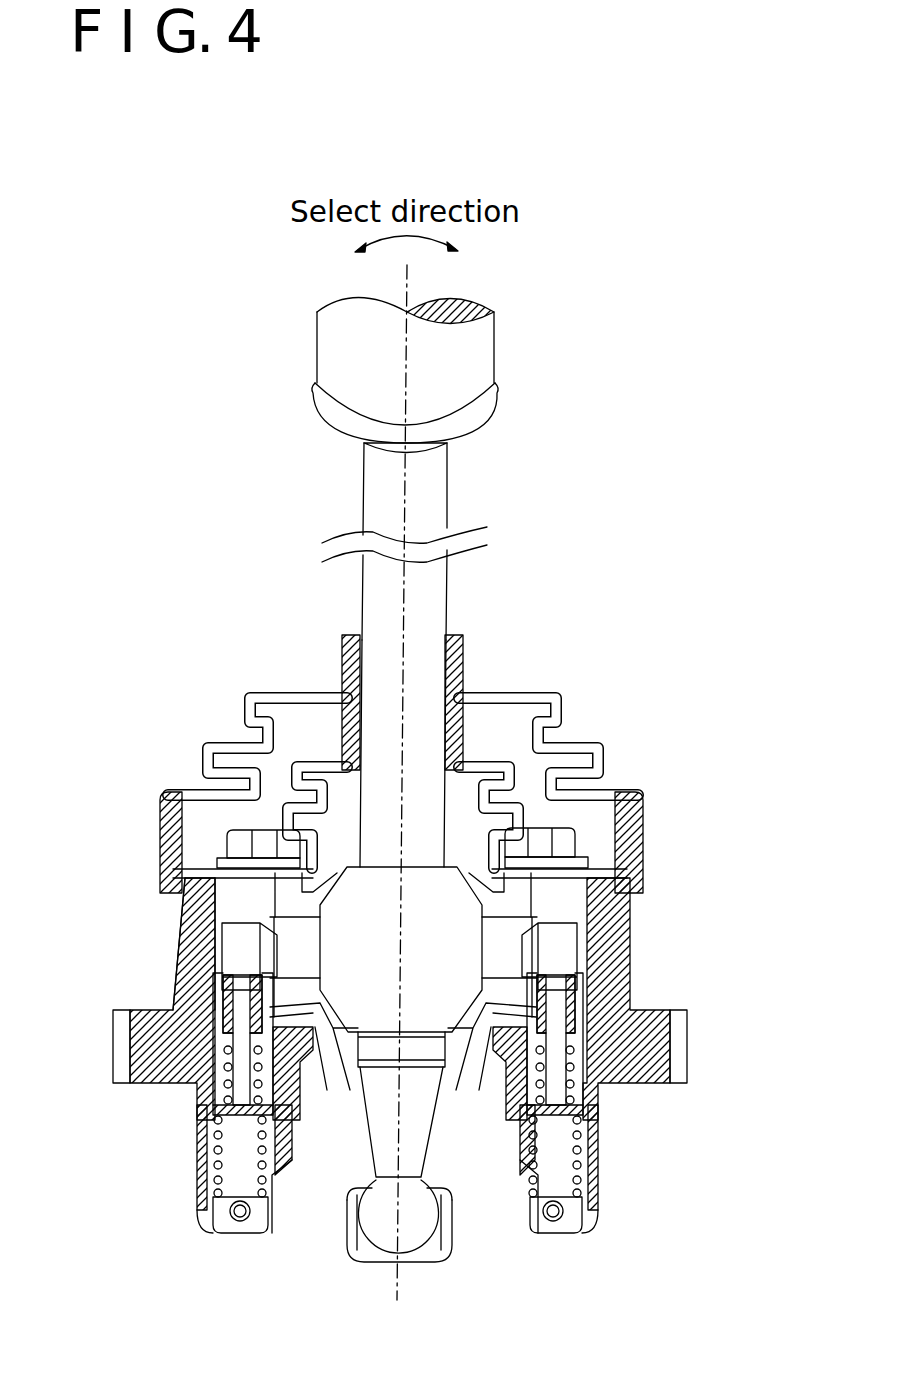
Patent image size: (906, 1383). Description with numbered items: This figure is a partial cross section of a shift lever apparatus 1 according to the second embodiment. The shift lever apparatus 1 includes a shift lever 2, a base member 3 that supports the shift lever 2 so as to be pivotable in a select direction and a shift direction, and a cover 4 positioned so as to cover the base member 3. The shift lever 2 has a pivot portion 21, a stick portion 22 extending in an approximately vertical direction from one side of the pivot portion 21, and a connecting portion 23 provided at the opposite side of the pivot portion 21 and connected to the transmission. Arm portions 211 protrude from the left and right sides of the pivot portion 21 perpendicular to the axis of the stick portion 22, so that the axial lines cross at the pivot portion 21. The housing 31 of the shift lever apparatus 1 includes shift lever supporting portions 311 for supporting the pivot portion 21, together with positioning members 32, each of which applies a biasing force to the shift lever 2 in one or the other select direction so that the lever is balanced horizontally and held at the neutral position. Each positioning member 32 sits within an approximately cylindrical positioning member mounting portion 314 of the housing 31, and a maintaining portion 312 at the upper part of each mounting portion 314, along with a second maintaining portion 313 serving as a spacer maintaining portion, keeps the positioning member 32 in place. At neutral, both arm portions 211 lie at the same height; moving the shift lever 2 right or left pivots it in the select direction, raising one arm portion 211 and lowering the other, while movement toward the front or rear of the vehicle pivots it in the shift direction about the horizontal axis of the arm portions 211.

The shift lever apparatus 1 is at (236, 224).
The shift lever 2 is at (450, 487).
The stick portion 22 is at (452, 598).
The pivot portion 21 is at (452, 865).
The arm portions 211 is at (232, 923).
The cover 4 is at (314, 694).
The base member 3 is at (134, 912).
The housing 31 is at (172, 990).
The positioning member 32 is at (224, 996).
The shift lever supporting portion 311 is at (317, 1030).
The maintaining portion 312 is at (113, 1072).
The second maintaining portion 313 is at (206, 1098).
The positioning member mounting portion 314 is at (240, 1163).
The connecting portion 23 is at (448, 1262).